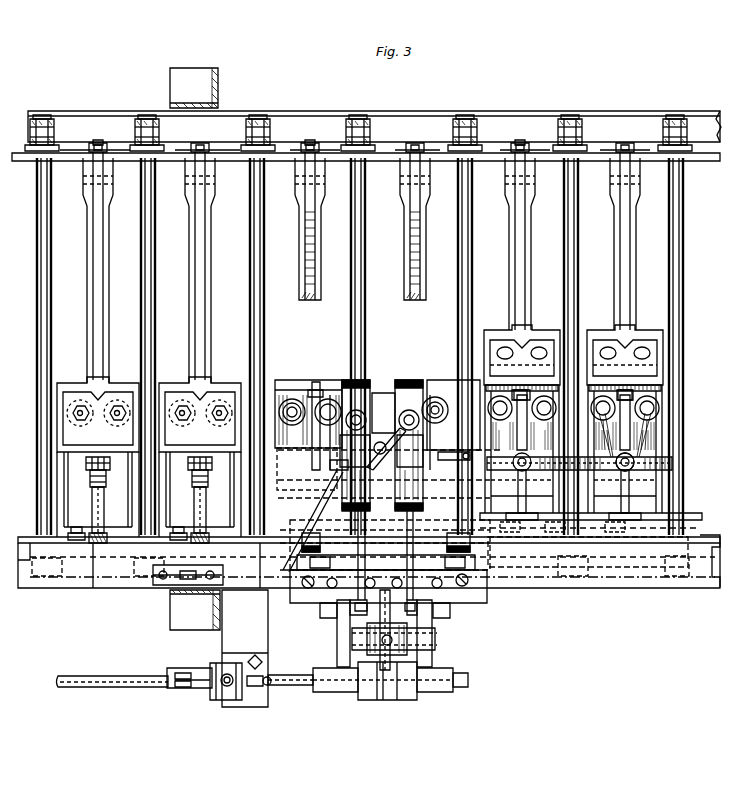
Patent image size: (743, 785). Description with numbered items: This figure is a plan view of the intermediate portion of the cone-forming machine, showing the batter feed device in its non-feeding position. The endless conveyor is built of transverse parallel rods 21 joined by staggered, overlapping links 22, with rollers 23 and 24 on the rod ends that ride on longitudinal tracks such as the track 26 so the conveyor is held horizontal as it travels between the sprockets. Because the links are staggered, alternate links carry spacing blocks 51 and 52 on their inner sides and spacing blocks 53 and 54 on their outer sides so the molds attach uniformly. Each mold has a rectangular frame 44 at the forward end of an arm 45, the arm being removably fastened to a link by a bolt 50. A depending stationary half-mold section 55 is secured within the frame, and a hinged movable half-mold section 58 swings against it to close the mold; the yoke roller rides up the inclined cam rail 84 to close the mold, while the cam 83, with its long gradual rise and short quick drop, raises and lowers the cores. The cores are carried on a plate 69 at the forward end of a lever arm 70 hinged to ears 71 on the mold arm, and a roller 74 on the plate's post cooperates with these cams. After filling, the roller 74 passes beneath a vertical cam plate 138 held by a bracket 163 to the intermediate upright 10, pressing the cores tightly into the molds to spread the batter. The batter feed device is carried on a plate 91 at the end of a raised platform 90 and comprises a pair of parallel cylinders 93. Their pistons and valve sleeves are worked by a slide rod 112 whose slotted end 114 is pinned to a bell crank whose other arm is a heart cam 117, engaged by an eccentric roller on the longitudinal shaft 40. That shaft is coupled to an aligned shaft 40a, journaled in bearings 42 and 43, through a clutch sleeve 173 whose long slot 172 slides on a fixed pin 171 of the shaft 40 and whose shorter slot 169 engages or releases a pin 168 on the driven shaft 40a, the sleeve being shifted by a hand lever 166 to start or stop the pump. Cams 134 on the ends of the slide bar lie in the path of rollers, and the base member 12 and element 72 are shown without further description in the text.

The intermediate upright 10 is at (160, 619).
The base frame 12 is at (68, 588).
The transverse parallel rods 21 is at (682, 282).
The links 22 is at (599, 158).
The rollers 23 is at (561, 588).
The rollers 24 is at (167, 134).
The track 26 is at (640, 118).
The longitudinal shaft 40 is at (119, 676).
The aligned shaft 40a is at (468, 680).
The bearing 42 is at (337, 651).
The bearing 43 is at (433, 651).
The rectangular frame 44 is at (187, 488).
The arm 45 is at (412, 332).
The bolt 50 is at (623, 145).
The spacing block 51 is at (228, 528).
The spacing block 52 is at (640, 164).
The spacing block 53 is at (74, 530).
The spacing block 54 is at (546, 156).
The stationary half-mold section 55 is at (690, 399).
The movable half-mold section 58 is at (665, 444).
The plate 69 is at (360, 434).
The lever arm 70 is at (642, 275).
The ears 71 is at (518, 200).
The link 72 is at (550, 444).
The roller 74 is at (628, 480).
The cam 83 is at (308, 506).
The cam rail 84 is at (550, 478).
The raised platform 90 is at (590, 588).
The plate 91 is at (495, 565).
The cylinders 93 is at (403, 378).
The slide rod 112 is at (378, 618).
The slotted end 114 is at (407, 640).
The heart cam 117 is at (387, 696).
The cam 134 is at (484, 590).
The cam plate 138 is at (162, 577).
The bracket 163 is at (178, 598).
The hand lever 166 is at (216, 689).
The pin 168 is at (290, 688).
The shorter slot 169 is at (268, 674).
The fixed pin 171 is at (175, 686).
The long slot 172 is at (174, 673).
The clutch sleeve 173 is at (193, 668).